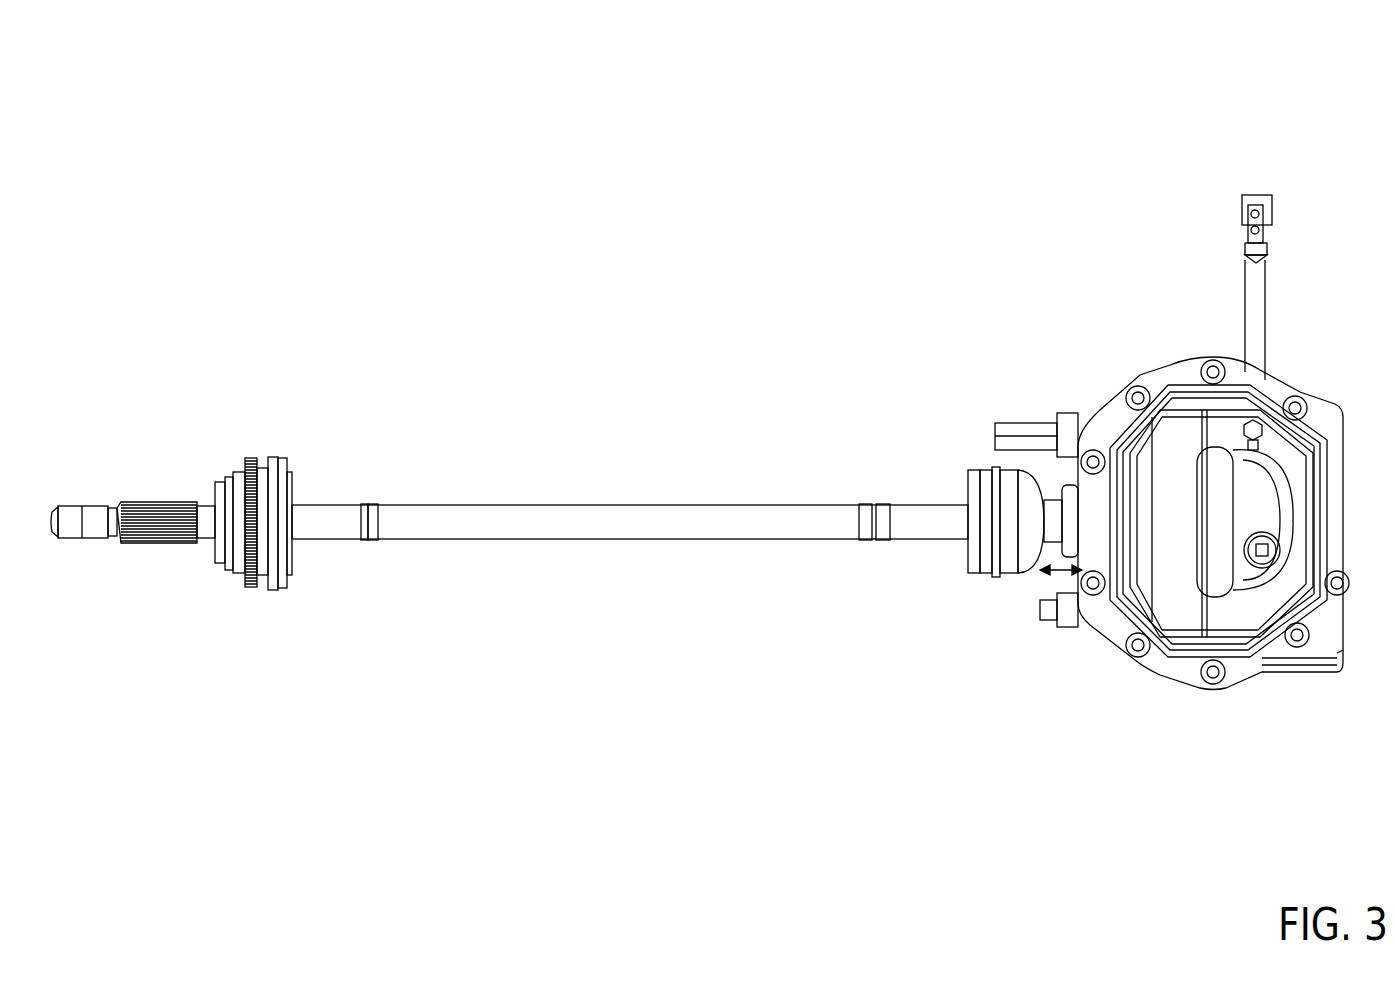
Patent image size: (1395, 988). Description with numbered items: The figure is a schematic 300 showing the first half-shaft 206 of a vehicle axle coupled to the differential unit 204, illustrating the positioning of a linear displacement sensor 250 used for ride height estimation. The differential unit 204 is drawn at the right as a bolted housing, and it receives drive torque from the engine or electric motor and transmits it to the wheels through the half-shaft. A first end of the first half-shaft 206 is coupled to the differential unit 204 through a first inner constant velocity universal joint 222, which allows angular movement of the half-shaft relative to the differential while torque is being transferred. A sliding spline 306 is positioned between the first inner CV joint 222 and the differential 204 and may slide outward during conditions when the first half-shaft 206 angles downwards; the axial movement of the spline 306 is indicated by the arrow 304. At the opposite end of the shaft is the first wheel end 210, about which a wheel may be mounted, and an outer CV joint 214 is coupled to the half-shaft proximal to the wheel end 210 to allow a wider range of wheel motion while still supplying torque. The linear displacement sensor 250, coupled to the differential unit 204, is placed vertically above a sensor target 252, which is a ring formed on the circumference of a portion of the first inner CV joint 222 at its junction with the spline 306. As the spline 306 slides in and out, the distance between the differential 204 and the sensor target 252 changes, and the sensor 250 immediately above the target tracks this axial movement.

The schematic 300 is at (1162, 60).
The differential unit 204 is at (1192, 365).
The first half-shaft 206 is at (737, 520).
The first wheel end 210 is at (60, 507).
The outer CV joint 214 is at (287, 575).
The first inner constant velocity universal (CV) joint 222 is at (977, 568).
The linear displacement sensor 250 is at (1040, 430).
The sensor target 252 is at (1028, 568).
The arrow 304 is at (1061, 584).
The sliding spline 306 is at (1060, 500).